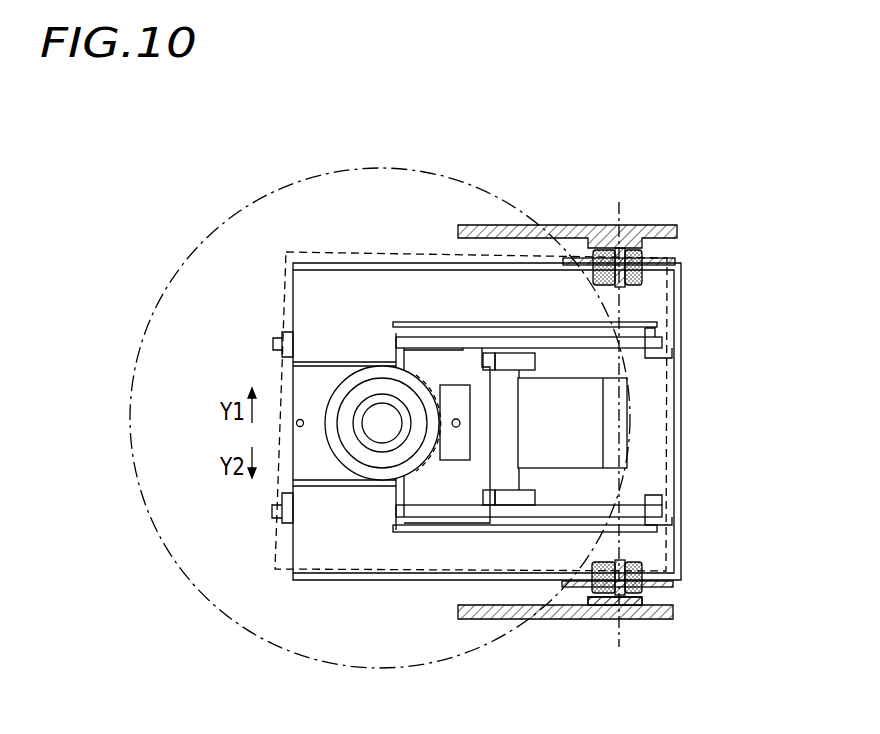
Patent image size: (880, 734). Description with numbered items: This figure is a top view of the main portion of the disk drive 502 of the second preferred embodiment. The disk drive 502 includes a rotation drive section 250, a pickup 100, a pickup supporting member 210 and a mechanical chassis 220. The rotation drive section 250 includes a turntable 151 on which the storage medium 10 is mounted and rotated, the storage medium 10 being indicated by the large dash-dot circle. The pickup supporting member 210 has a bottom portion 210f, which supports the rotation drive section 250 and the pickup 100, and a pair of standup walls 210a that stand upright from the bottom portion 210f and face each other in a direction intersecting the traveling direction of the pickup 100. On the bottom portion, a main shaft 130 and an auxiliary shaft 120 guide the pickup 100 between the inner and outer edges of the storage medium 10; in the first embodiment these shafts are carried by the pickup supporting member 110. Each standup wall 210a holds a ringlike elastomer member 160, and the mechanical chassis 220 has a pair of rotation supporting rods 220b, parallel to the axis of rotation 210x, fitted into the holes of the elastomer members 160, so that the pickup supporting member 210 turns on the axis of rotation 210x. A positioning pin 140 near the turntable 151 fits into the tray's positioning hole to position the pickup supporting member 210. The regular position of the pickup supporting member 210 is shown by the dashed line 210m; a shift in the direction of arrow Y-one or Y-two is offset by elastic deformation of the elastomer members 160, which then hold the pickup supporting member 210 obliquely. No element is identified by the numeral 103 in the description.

The storage medium 10 is at (200, 247).
The pickup 100 is at (417, 513).
The drive motor 103 is at (597, 418).
The pickup supporting member 110 is at (308, 392).
The auxiliary shaft 120 is at (548, 517).
The main shaft 130 is at (543, 338).
The positioning pin 140 is at (300, 427).
The turntable 151 is at (357, 467).
The ringlike elastomer member 160 is at (630, 280).
The pickup supporting member 210 is at (388, 250).
The standup wall 210a is at (673, 258).
The bottom portion 210f is at (330, 292).
The dashed line indicating regular position 210m is at (286, 263).
The axis of rotation 210x is at (620, 632).
The mechanical chassis 220 is at (656, 225).
The rotation supporting rod 220b is at (632, 275).
The rotation drive section 250 is at (332, 463).
The disk drive 502 is at (610, 148).